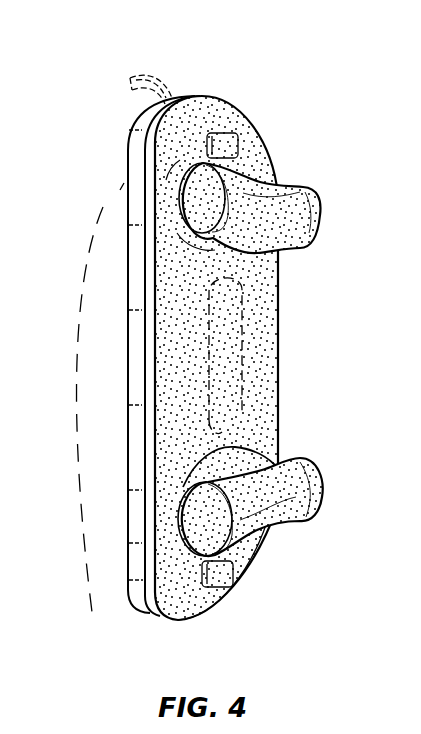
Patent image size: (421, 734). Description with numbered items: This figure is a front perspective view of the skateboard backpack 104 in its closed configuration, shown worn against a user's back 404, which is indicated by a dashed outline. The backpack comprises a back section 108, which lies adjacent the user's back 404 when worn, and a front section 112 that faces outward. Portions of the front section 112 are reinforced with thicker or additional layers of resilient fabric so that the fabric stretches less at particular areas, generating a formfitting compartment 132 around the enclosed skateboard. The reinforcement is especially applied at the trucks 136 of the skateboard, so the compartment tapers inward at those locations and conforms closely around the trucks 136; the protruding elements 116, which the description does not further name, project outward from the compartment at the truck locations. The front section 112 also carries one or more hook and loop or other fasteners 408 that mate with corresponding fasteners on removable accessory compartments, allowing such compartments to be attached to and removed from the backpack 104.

The skateboard backpack 104 is at (198, 339).
The back section 108 is at (131, 595).
The front section 112 is at (234, 586).
The knob 116 is at (303, 188).
The formfitting compartment 132 is at (290, 338).
The trucks 136 is at (260, 168).
The user's back 404 is at (103, 208).
The fasteners 408 is at (233, 132).